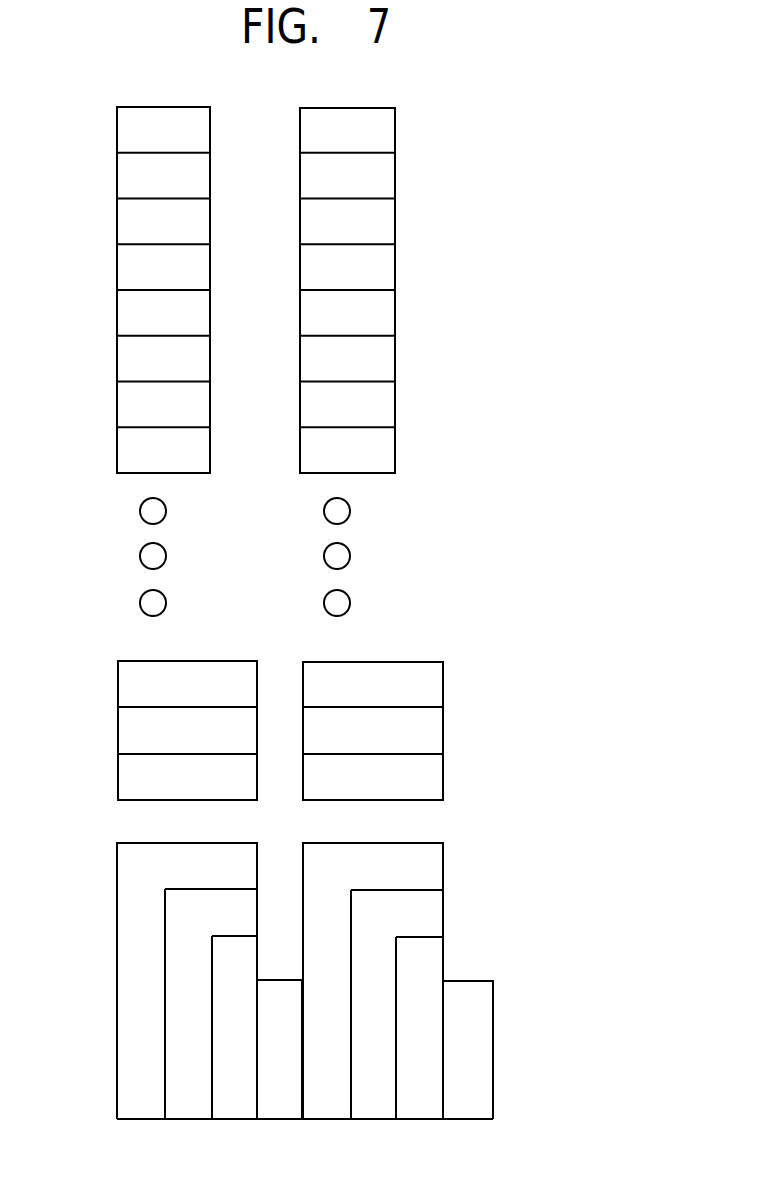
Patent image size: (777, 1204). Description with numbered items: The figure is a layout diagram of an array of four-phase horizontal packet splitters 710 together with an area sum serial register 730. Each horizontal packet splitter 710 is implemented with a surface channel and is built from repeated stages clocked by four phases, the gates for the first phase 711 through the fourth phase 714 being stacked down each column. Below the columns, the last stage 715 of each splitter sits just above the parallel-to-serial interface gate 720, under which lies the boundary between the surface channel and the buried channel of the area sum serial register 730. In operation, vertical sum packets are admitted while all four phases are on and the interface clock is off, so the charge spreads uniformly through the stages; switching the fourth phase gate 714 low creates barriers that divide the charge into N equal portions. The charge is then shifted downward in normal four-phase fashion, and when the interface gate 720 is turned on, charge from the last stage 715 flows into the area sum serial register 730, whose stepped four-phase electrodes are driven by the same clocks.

The horizontal packet splitter 710 is at (367, 453).
The H1 gate 711 is at (397, 135).
The H4 gate 714 is at (397, 273).
The last stage 715 is at (448, 664).
The parallel-to-serial interface gate 720 is at (456, 802).
The area sum serial register 730 is at (633, 945).